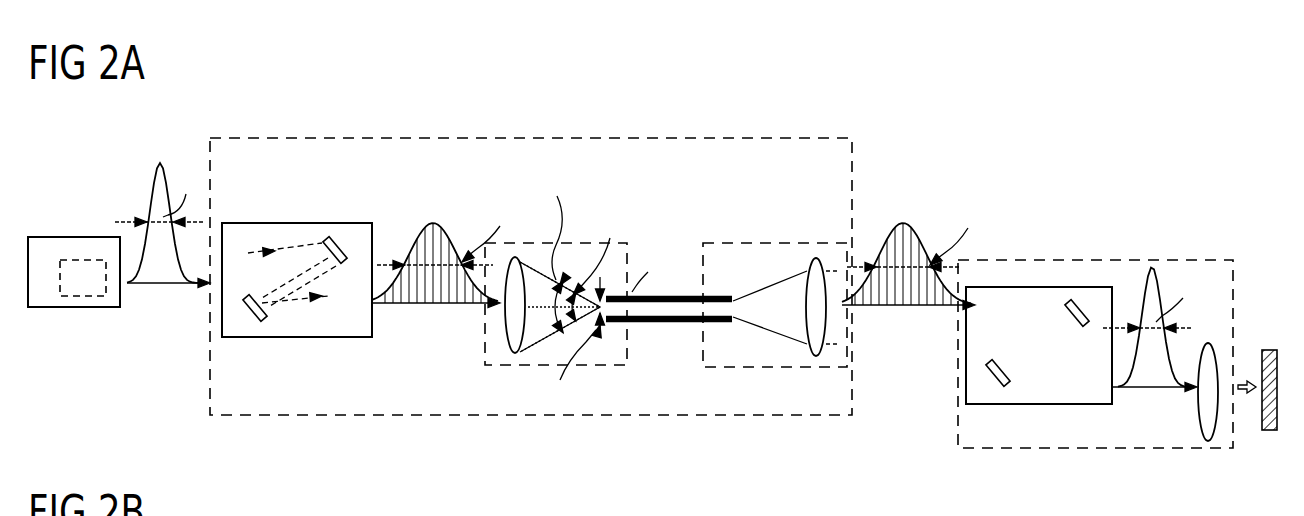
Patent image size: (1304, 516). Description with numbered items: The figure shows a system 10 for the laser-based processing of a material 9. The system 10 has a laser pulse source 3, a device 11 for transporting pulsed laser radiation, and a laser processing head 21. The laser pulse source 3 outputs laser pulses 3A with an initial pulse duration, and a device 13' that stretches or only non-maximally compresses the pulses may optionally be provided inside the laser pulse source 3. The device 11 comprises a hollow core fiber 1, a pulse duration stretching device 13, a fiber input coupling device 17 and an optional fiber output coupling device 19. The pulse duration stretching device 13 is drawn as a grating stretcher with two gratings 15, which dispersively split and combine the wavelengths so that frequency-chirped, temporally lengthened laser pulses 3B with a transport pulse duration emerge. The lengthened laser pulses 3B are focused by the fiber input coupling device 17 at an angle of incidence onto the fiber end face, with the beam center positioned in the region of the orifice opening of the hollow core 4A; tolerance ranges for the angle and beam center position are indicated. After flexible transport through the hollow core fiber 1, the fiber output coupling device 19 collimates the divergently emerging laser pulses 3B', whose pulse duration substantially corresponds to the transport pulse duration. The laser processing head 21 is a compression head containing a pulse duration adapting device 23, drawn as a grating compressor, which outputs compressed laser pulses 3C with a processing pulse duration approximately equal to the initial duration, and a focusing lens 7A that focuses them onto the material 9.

The hollow core fiber 1 is at (669, 294).
The laser pulse source 3 is at (62, 237).
The laser pulses 3A is at (150, 320).
The lengthened laser pulses 3B is at (452, 232).
The emerging laser pulses 3B' is at (922, 229).
The compressed laser pulses 3C is at (1078, 335).
The hollow core 4A is at (667, 323).
The focusing lens 7A is at (1208, 442).
The material 9 is at (1269, 350).
The system 10 is at (1132, 171).
The device for transporting pulsed laser radiation 11 is at (697, 138).
The pulse duration stretching device 13 is at (297, 312).
The device 13' is at (83, 313).
The gratings 15 is at (337, 240).
The fiber input coupling device 17 is at (485, 342).
The fiber output coupling device 19 is at (752, 243).
The laser processing head 21 is at (1077, 260).
The pulse duration adapting device 23 is at (966, 382).